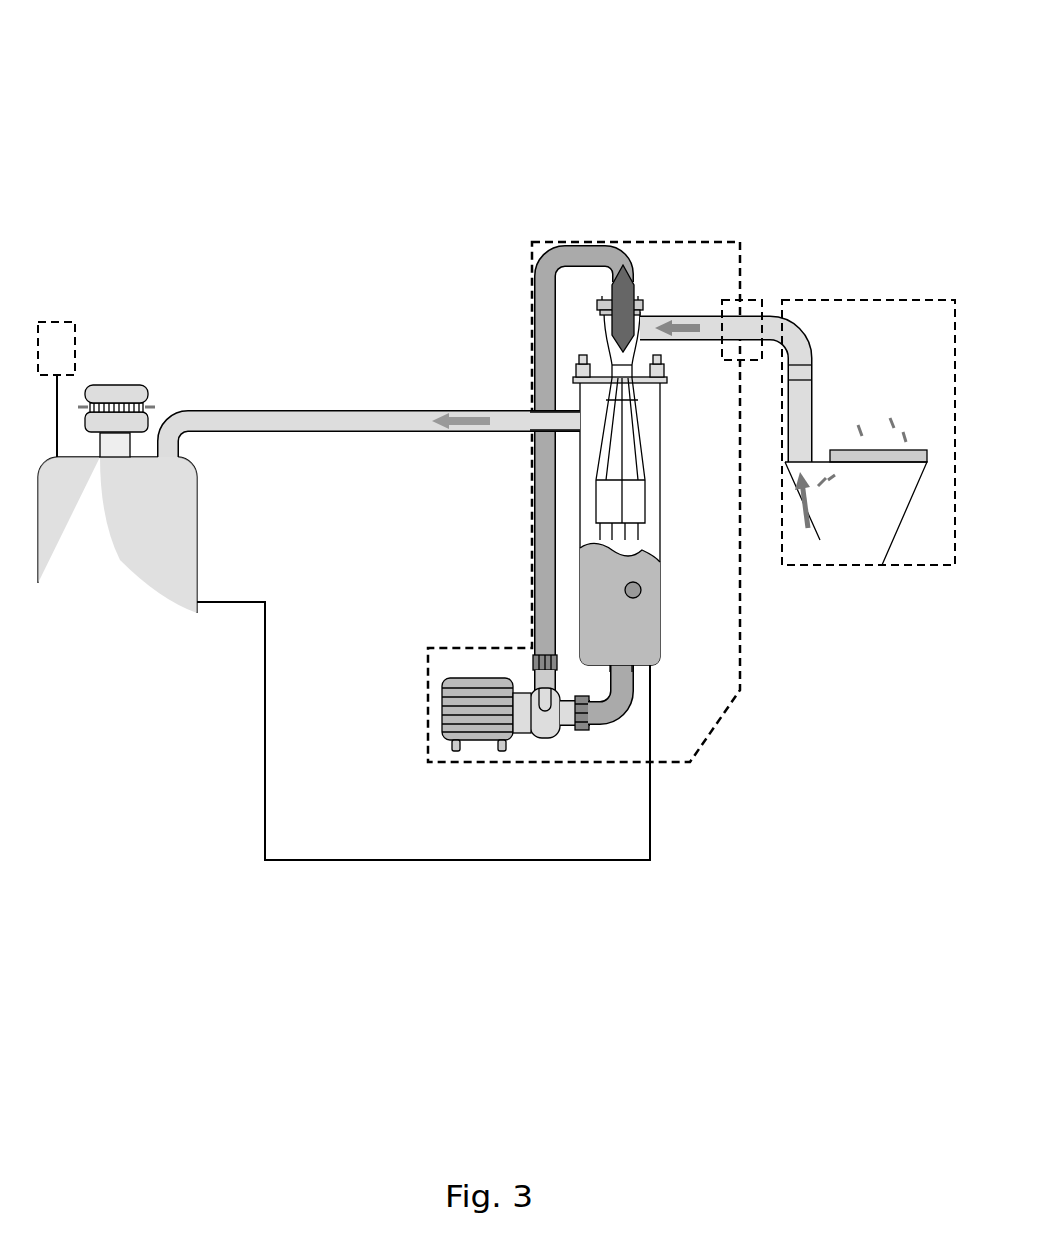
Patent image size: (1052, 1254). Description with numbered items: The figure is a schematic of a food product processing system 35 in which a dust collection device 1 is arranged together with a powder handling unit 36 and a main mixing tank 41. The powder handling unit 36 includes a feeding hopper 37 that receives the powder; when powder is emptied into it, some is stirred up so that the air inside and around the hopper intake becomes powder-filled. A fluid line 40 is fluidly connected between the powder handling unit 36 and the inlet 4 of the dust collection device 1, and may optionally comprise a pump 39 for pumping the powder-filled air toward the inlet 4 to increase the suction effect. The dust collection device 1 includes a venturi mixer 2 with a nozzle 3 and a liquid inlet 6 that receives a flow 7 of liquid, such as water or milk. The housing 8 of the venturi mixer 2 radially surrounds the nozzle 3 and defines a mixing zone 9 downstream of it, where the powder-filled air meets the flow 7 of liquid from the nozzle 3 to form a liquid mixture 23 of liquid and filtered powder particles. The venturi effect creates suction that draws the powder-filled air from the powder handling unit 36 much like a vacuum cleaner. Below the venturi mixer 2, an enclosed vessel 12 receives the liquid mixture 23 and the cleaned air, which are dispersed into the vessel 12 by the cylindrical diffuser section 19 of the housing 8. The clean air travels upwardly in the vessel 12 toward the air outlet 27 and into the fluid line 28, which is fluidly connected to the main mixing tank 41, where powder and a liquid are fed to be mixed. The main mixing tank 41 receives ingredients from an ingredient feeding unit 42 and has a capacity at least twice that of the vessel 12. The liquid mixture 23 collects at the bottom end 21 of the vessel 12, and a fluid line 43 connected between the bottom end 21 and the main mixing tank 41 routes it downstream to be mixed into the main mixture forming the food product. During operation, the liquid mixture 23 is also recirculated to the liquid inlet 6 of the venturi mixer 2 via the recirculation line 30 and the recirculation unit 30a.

The food product processing system 35 is at (803, 63).
The dust collection device 1 is at (660, 247).
The flow of liquid 7 is at (620, 263).
The liquid inlet 6 is at (610, 285).
The venturi mixer 2 is at (607, 327).
The nozzle 3 is at (607, 360).
The inlet 4 is at (639, 333).
The housing 8 is at (612, 389).
The mixing zone 9 is at (657, 388).
The vessel 12 is at (663, 450).
The cylindrical diffuser section 19 is at (598, 495).
The liquid mixture 23 is at (661, 561).
The bottom end 21 is at (653, 667).
The recirculation line 30 is at (537, 548).
The recirculation unit 30a is at (443, 690).
The air outlet 27 is at (538, 443).
The fluid line 28 is at (410, 430).
The main mixing tank 41 is at (200, 527).
The ingredient feeding unit 42 is at (78, 357).
The fluid line 43 is at (267, 663).
The powder handling unit 36 is at (900, 300).
The feeding hopper 37 is at (895, 540).
The pump 39 is at (768, 300).
The fluid line 40 is at (797, 352).